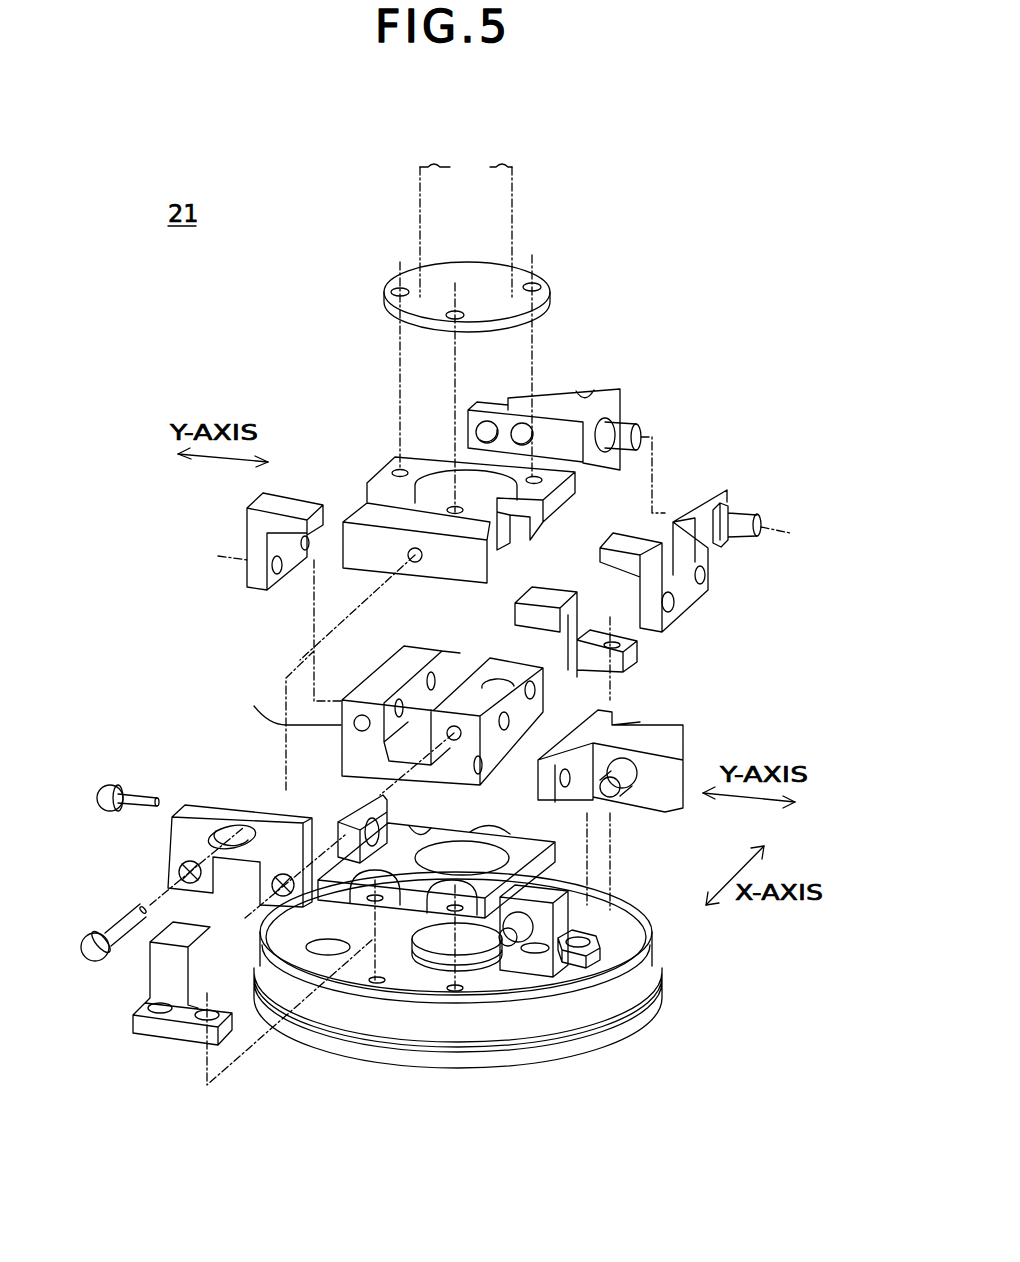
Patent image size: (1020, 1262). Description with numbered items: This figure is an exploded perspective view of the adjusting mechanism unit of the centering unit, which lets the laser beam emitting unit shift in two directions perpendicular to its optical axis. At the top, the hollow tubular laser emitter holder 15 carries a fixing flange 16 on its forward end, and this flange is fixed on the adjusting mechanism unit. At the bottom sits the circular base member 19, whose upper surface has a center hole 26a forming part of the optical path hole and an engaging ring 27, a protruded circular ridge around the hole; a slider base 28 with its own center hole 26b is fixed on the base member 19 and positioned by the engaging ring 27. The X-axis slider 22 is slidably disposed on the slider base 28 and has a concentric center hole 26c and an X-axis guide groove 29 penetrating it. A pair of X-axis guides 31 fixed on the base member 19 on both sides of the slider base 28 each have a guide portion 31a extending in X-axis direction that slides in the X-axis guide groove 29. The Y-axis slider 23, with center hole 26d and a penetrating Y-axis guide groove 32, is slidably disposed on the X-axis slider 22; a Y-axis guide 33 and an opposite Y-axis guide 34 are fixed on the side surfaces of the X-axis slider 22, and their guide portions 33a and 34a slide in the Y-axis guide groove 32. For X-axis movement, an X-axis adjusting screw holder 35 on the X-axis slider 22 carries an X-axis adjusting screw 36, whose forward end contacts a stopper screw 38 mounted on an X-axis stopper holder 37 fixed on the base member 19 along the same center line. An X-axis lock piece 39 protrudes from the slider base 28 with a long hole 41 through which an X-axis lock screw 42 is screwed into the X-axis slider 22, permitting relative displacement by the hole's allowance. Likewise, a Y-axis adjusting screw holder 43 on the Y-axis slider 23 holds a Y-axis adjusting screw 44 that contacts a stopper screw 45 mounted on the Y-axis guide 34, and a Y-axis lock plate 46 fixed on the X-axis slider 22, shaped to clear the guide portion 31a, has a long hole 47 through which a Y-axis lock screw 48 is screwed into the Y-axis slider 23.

The laser emitter holder 15 is at (513, 212).
The fixing flange 16 is at (522, 263).
The base member 19 is at (664, 985).
The X-axis slider 22 is at (390, 715).
The Y-axis slider 23 is at (388, 468).
The center hole 26a is at (473, 950).
The center hole 26b is at (472, 852).
The center hole 26c is at (488, 680).
The center hole 26d is at (445, 488).
The engaging ring 27 is at (427, 967).
The slider base 28 is at (555, 858).
The X-axis guide groove 29 is at (389, 760).
The X-axis guide 31 is at (635, 670).
The guide portion 31a is at (213, 958).
The Y-axis guide groove 32 is at (527, 528).
The Y-axis guide 33 is at (248, 530).
The guide portion 33a is at (290, 498).
The Y-axis guide 34 is at (690, 608).
The guide portion 34a is at (636, 530).
The X-axis adjusting screw holder 35 is at (683, 783).
The X-axis adjusting screw 36 is at (627, 760).
The X-axis stopper holder 37 is at (572, 930).
The stopper screw 38 is at (530, 948).
The X-axis lock piece 39 is at (357, 808).
The long hole 41 is at (372, 830).
The X-axis lock screw 42 is at (110, 786).
The Y-axis adjusting screw holder 43 is at (565, 392).
The Y-axis adjusting screw 44 is at (622, 410).
The stopper screw 45 is at (745, 512).
The Y-axis lock plate 46 is at (172, 815).
The long hole 47 is at (232, 832).
The Y-axis lock screw 48 is at (130, 905).